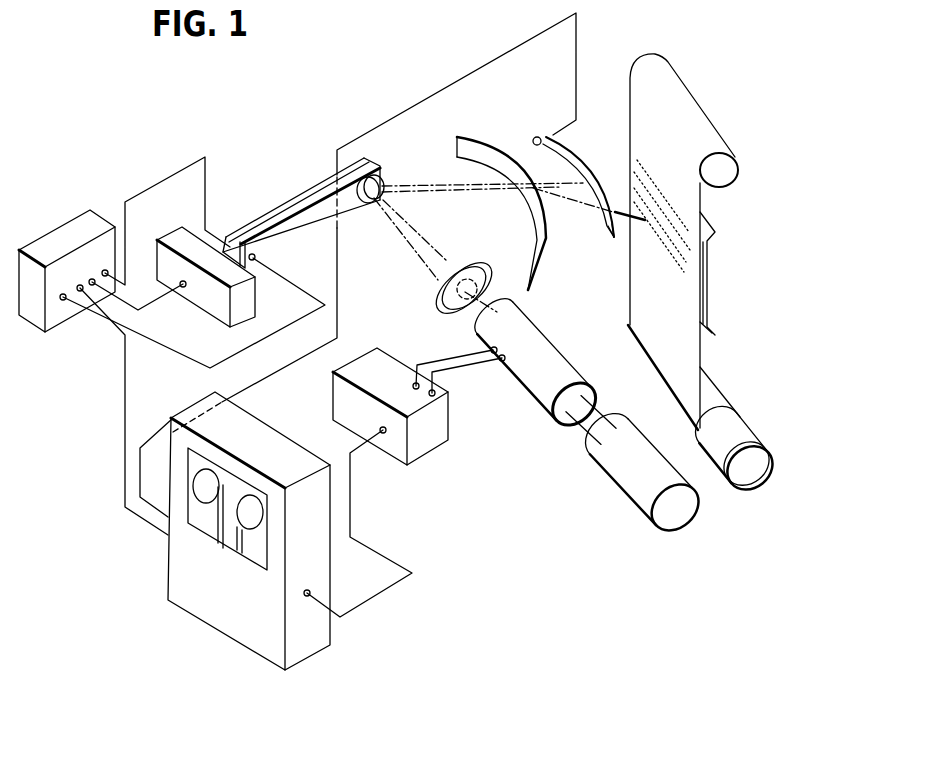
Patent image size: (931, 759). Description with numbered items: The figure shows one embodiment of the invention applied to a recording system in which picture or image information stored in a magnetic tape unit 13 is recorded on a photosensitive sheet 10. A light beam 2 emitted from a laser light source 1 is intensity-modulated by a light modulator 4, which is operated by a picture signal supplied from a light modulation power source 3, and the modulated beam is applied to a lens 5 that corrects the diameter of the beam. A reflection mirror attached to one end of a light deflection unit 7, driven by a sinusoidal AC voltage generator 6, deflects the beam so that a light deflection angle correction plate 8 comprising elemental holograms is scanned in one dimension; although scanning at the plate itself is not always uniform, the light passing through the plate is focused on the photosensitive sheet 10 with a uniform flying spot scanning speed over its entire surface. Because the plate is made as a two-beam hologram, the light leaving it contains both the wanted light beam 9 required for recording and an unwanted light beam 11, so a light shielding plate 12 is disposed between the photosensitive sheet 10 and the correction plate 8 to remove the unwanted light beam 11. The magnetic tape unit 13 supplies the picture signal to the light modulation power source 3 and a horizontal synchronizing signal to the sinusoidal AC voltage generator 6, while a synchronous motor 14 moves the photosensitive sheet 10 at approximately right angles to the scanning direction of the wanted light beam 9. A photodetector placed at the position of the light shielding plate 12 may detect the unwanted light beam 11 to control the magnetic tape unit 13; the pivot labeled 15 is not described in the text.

The laser light source 1 is at (630, 493).
The light beam 2 is at (577, 427).
The light modulation power source 3 is at (425, 438).
The light modulator 4 is at (540, 398).
The lens 5 is at (433, 293).
The sinusoidal AC voltage generator 6 is at (58, 315).
The light deflection unit 7 is at (272, 211).
The light deflection angle correction plate 8 is at (467, 151).
The wanted light beam 9 is at (575, 207).
The photosensitive sheet 10 is at (678, 252).
The unwanted light beam 11 is at (548, 183).
The light shielding plate 12 is at (605, 234).
The magnetic tape unit 13 is at (225, 618).
The synchronous motor 14 is at (748, 437).
The mirror pivot 15 is at (549, 132).